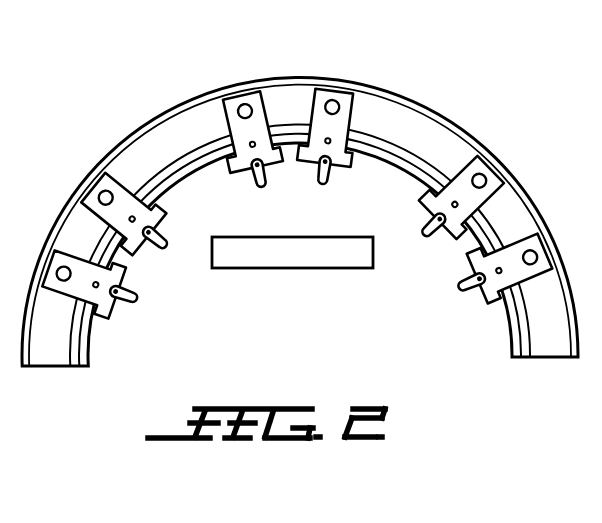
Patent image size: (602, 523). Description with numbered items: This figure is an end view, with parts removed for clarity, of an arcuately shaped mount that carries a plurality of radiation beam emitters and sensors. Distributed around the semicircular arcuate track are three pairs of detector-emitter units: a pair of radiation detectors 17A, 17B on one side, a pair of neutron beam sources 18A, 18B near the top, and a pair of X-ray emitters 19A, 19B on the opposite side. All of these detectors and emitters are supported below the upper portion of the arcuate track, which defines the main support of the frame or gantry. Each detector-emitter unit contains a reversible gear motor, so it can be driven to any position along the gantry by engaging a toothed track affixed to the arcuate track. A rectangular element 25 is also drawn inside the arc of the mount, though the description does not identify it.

The radiation detector 17A is at (108, 300).
The radiation detector 17B is at (160, 217).
The neutron beam source 18A is at (242, 173).
The neutron beam source 18B is at (312, 170).
The X-ray emitter 19A is at (455, 240).
The X-ray emitter 19B is at (495, 300).
The plate 25 is at (275, 270).